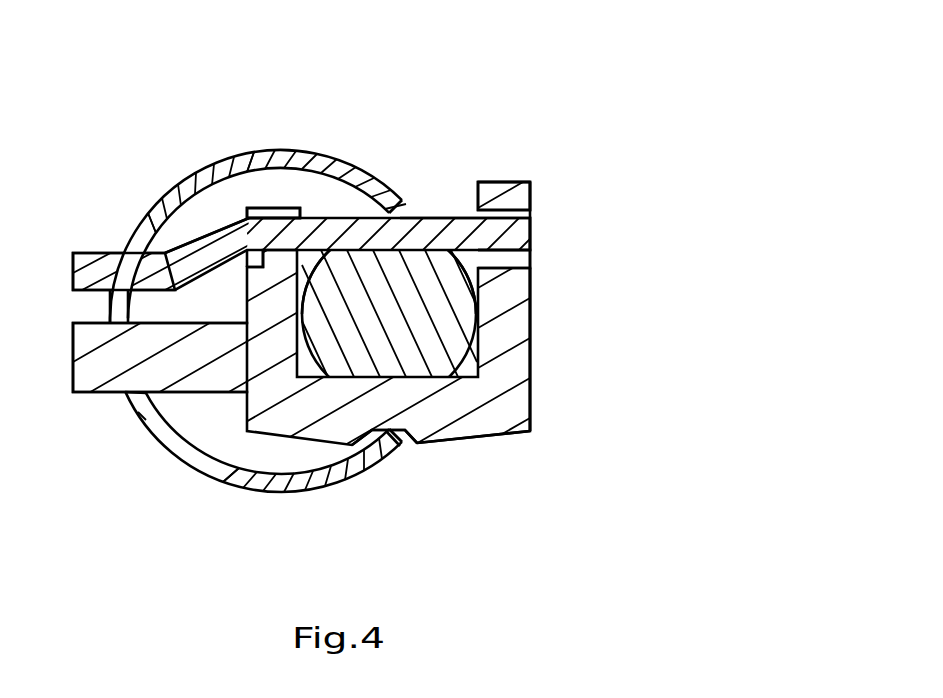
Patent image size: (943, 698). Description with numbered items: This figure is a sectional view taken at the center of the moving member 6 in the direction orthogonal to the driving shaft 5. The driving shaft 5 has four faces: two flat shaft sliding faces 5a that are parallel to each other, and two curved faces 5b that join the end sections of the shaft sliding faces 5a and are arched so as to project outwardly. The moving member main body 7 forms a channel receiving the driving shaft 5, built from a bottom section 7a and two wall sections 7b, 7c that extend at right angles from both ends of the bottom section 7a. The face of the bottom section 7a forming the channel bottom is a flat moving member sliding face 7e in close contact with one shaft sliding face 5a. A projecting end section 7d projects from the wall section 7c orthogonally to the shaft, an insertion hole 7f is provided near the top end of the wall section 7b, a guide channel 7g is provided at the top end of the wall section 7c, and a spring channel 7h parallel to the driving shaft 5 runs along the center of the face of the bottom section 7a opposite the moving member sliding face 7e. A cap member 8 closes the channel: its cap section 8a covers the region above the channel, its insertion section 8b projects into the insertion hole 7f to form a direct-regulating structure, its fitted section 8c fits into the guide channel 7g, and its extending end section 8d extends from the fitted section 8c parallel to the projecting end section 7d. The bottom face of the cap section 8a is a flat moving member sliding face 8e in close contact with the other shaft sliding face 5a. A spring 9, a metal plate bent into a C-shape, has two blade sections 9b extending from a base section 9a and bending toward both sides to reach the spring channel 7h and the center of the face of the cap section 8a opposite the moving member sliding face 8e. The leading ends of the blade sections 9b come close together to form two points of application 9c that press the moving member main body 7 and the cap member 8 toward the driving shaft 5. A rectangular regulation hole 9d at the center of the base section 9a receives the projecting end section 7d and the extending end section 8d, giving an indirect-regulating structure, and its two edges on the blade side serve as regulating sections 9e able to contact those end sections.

The driving shaft 5 is at (491, 317).
The shaft sliding face 5a is at (433, 378).
The curved face 5b is at (482, 341).
The moving member 6 is at (152, 148).
The moving member main body 7 is at (542, 407).
The bottom section 7a is at (500, 436).
The wall section 7b is at (508, 181).
The wall section 7c is at (300, 207).
The projecting end section 7d is at (74, 358).
The moving member sliding face 7e is at (531, 377).
The insertion hole 7f is at (532, 214).
The guide channel 7g is at (150, 213).
The spring channel 7h is at (415, 444).
The cap member 8 is at (347, 205).
The cap section 8a is at (447, 217).
The insertion section 8b is at (532, 237).
The fitted section 8c is at (200, 212).
The extending end section 8d is at (110, 254).
The moving member sliding face 8e is at (482, 287).
The spring 9 is at (211, 154).
The base section 9a is at (110, 306).
The blade section 9b is at (242, 488).
The point of application 9c is at (394, 447).
The regulation hole 9d is at (127, 396).
The regulating section 9e is at (140, 417).